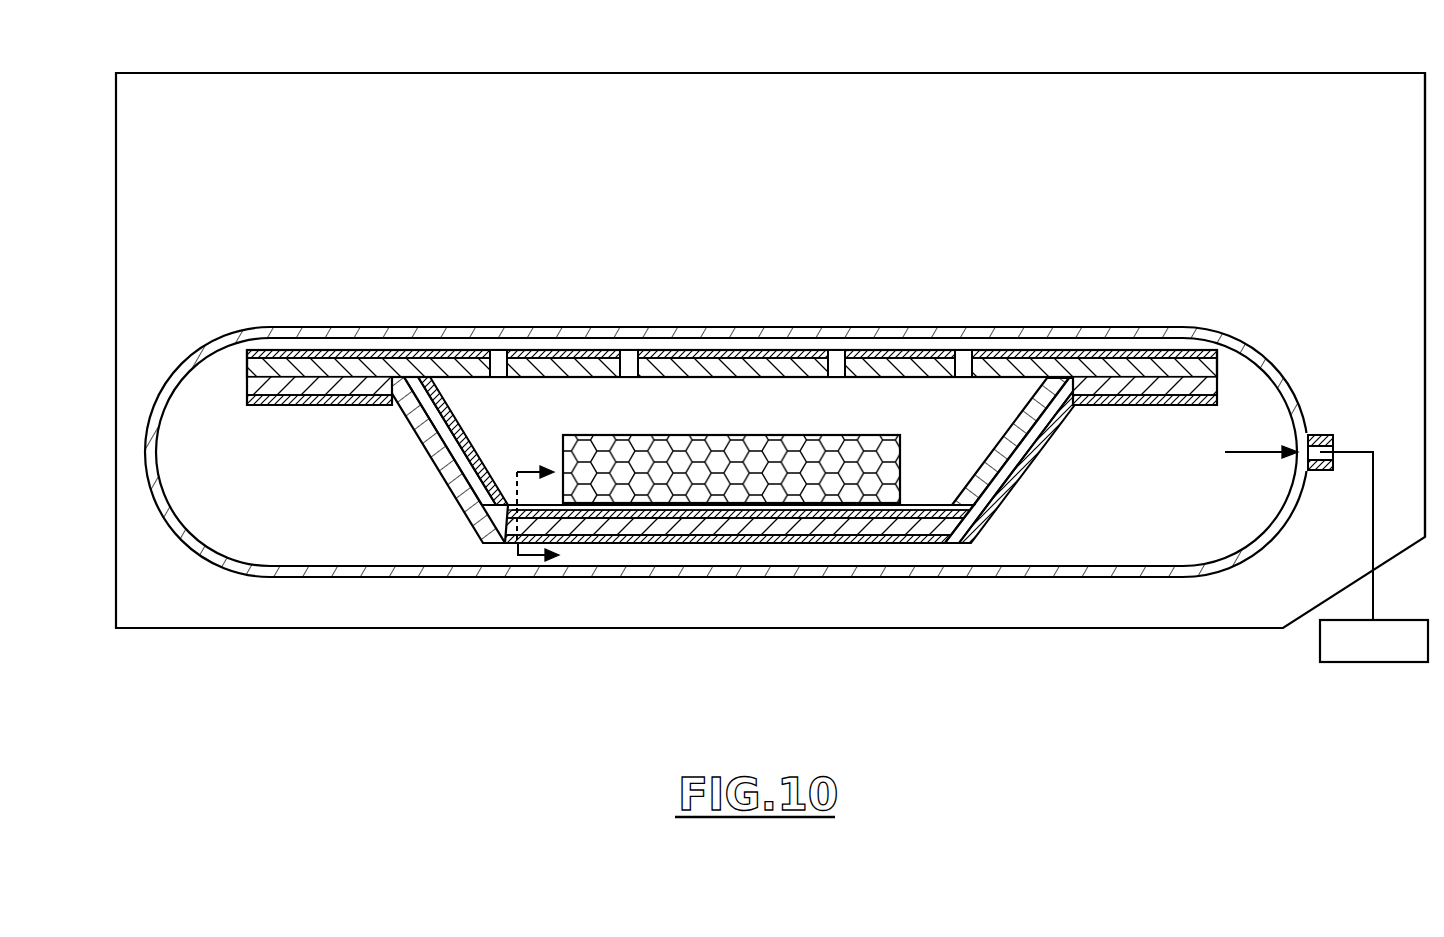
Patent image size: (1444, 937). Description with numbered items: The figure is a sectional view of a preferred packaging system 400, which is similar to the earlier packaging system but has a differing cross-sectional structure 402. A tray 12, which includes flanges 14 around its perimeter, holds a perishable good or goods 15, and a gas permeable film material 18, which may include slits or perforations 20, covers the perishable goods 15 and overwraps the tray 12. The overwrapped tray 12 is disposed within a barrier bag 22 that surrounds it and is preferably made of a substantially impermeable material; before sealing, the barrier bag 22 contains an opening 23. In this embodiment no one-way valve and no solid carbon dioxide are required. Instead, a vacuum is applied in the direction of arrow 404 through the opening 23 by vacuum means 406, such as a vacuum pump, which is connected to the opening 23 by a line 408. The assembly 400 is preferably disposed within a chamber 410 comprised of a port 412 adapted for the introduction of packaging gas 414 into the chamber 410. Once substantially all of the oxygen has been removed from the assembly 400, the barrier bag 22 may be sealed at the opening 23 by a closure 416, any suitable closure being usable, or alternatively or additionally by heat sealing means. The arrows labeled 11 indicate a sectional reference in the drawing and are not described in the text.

The packaging system 400 is at (641, 200).
The chamber 410 is at (322, 73).
The port 412 is at (1425, 220).
The packaging gas 414 is at (1148, 22).
The closure 416 is at (1337, 447).
The barrier bag 22 is at (382, 340).
The flanges 14 is at (323, 402).
The gas permeable film material 18 is at (1010, 492).
The slits or perforations 20 is at (1048, 440).
The perishable goods 15 is at (785, 448).
The tray 12 is at (752, 522).
The cross-sectional structure 402 is at (823, 543).
The flow arrows 11 is at (510, 607).
The opening 23 is at (1337, 447).
The arrow 404 is at (1260, 443).
The line 408 is at (1373, 557).
The vacuum means 406 is at (1352, 654).